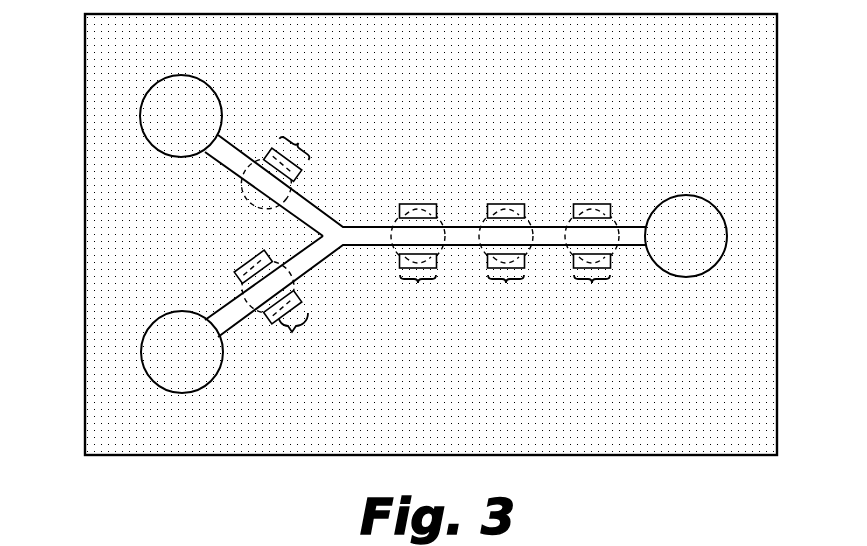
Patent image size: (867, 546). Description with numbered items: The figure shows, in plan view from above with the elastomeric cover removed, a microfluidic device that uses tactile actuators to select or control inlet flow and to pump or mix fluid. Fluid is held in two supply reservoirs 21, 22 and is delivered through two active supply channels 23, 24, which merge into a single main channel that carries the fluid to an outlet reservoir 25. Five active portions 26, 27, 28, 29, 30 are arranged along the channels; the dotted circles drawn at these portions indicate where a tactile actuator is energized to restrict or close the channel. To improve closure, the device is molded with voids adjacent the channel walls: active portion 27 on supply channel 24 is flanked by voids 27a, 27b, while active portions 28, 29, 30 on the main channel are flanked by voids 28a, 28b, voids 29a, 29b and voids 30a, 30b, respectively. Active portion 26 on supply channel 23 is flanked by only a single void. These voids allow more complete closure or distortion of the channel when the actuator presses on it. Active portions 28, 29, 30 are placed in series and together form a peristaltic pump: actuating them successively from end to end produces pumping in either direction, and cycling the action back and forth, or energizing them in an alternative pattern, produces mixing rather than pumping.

The supply reservoir 21 is at (158, 115).
The supply reservoir 22 is at (157, 353).
The active supply channel 23 is at (224, 166).
The active supply channel 24 is at (322, 262).
The outlet reservoir 25 is at (713, 237).
The active portion 26 is at (278, 167).
The active portion 27 is at (238, 317).
The void 27a is at (240, 268).
The void 27b is at (268, 320).
The active portion 28 is at (438, 229).
The void 28a is at (422, 203).
The void 28b is at (437, 260).
The active portion 29 is at (525, 229).
The void 29a is at (507, 203).
The void 29b is at (525, 260).
The active portion 30 is at (611, 230).
The void 30a is at (592, 203).
The void 30b is at (612, 260).